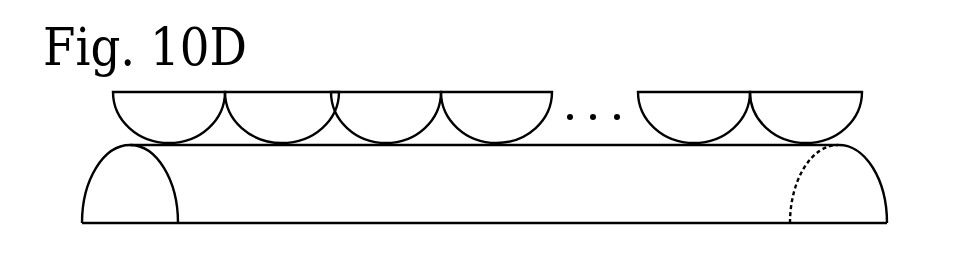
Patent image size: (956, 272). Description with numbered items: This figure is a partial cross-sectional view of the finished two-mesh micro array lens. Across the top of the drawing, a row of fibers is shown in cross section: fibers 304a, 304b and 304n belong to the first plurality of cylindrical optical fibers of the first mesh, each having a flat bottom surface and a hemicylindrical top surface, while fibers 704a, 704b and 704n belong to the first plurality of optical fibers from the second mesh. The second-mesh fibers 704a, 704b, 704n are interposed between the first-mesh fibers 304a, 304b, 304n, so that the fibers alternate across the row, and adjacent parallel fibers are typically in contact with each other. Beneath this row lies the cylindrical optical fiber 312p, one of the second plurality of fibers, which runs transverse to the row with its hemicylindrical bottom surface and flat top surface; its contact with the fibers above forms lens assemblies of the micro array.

The cylindrical optical fiber 304a is at (202, 123).
The cylindrical optical fiber 704a is at (316, 123).
The cylindrical optical fiber 304b is at (352, 123).
The cylindrical optical fiber 704b is at (462, 123).
The cylindrical optical fiber 304n is at (660, 123).
The cylindrical optical fiber 704n is at (770, 123).
The cylindrical optical fiber 312p is at (452, 195).